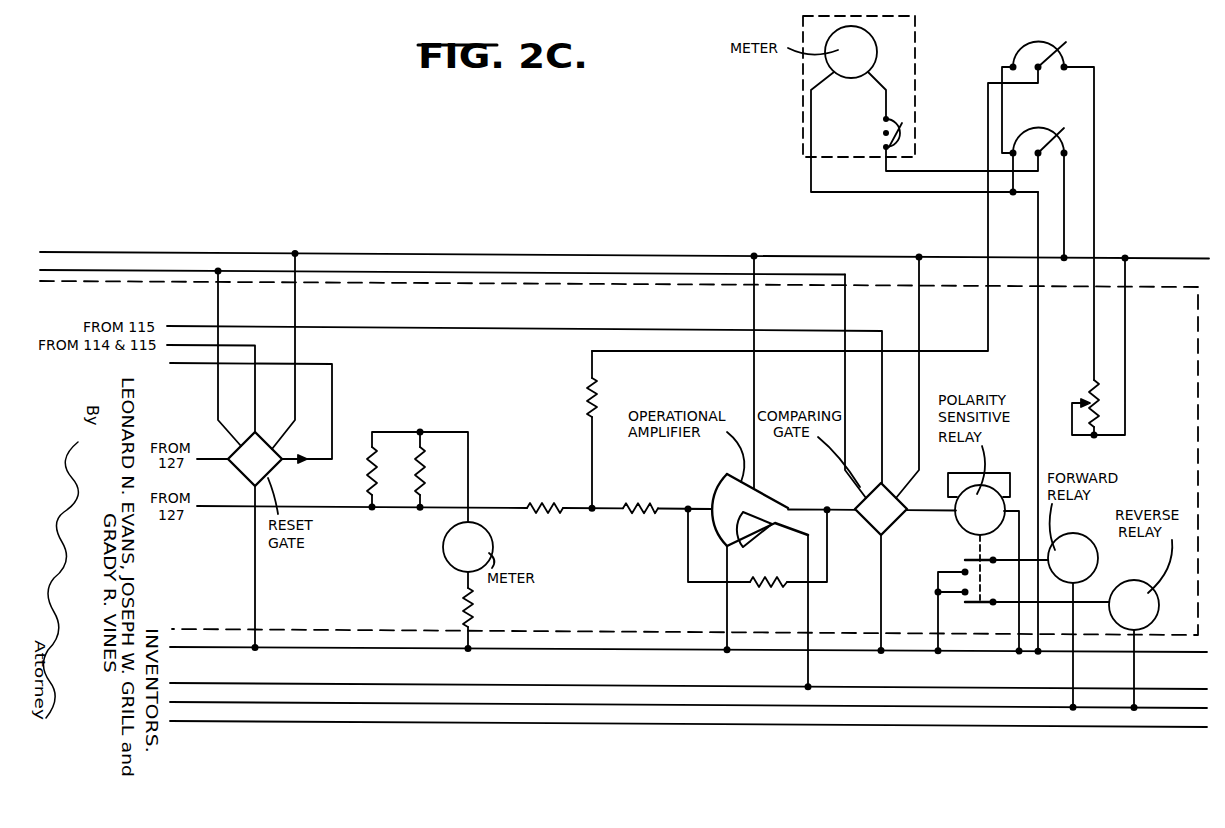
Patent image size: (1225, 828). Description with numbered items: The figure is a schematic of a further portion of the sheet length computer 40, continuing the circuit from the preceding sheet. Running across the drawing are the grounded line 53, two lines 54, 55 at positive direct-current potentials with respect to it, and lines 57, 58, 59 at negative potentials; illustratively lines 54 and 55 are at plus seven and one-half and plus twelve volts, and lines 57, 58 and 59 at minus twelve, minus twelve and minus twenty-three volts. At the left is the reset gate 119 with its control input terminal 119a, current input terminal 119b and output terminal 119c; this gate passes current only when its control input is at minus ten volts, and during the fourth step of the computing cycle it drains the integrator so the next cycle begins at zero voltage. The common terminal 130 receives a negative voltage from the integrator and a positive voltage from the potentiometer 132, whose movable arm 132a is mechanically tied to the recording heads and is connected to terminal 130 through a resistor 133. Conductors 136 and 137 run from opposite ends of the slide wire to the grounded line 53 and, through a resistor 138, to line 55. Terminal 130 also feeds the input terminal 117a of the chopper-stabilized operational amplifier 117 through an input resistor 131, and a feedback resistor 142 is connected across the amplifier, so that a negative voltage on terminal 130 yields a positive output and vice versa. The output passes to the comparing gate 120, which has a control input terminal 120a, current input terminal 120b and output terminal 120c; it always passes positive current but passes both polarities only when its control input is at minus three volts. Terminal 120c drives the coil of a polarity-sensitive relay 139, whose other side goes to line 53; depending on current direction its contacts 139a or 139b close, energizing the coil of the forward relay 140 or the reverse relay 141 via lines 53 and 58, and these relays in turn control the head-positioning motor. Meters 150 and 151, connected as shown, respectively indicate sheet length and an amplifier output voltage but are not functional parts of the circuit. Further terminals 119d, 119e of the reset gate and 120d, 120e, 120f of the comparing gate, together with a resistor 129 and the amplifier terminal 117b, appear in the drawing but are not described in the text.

The line 55 is at (107, 252).
The line 54 is at (107, 269).
The grounded line 53 is at (523, 652).
The line 57 is at (612, 685).
The line 58 is at (612, 703).
The line 59 is at (612, 722).
The sheet length computer 40 is at (562, 313).
The reset gate 119 is at (243, 474).
The control input terminal 119a is at (262, 434).
The current input terminal 119b is at (231, 452).
The output terminal 119c is at (274, 470).
The reset gate terminal 119d is at (278, 449).
The reset gate input terminal 119e is at (242, 445).
The meter 151 is at (452, 556).
The resistor 129 is at (563, 500).
The common terminal 130 is at (592, 511).
The input resistor 131 is at (650, 500).
The resistor 133 is at (588, 396).
The operational amplifier 117 is at (762, 493).
The input terminal 117a is at (731, 494).
The operational amplifier output 117b is at (787, 508).
The feedback resistor 142 is at (768, 588).
The comparing gate 120 is at (893, 521).
The control input terminal 120a is at (858, 488).
The current input terminal 120b is at (860, 511).
The output terminal 120c is at (897, 492).
The comparing gate input terminal 120d is at (866, 497).
The comparing gate terminal 120e is at (906, 485).
The comparing gate terminal 120f is at (878, 537).
The polarity-sensitive relay 139 is at (1004, 505).
The contacts 139a is at (975, 558).
The contacts 139b is at (964, 604).
The forward relay 140 is at (1083, 546).
The reverse relay 141 is at (1124, 590).
The conductor 136 is at (1040, 348).
The conductor 137 is at (1095, 212).
The resistor 138 is at (1094, 388).
The potentiometer 132 is at (1022, 48).
The movable arm 132a is at (1063, 47).
The meter 150 is at (847, 70).